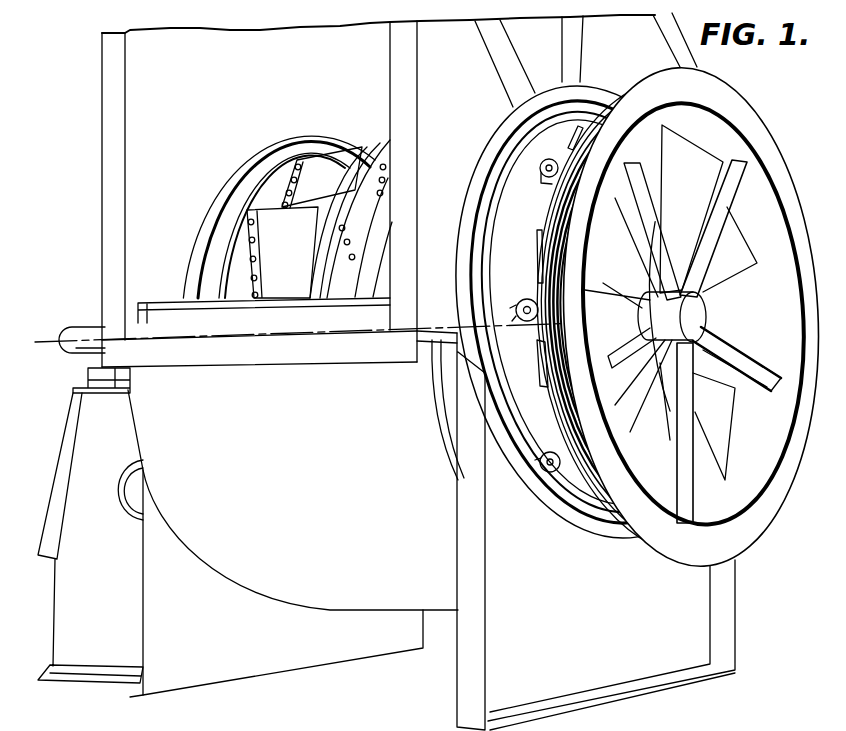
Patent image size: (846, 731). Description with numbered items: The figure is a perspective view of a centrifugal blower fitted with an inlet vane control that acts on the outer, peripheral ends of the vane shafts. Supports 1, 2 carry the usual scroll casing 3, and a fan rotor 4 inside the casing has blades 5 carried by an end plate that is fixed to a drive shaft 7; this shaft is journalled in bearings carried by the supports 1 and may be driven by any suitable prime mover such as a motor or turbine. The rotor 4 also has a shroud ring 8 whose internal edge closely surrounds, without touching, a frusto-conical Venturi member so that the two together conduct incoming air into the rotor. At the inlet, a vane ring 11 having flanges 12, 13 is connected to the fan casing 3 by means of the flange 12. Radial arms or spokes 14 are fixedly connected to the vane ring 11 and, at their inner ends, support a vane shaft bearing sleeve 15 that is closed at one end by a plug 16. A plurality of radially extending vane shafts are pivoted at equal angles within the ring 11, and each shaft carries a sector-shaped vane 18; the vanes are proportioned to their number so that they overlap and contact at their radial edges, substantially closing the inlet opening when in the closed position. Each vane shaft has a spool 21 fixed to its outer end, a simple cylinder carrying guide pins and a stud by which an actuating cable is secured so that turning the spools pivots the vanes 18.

The support 1 is at (218, 668).
The support 2 is at (57, 342).
The scroll casing 3 is at (336, 600).
The fan rotor 4 is at (235, 160).
The blades 5 is at (336, 188).
The drive shaft 7 is at (80, 327).
The shroud ring 8 is at (348, 274).
The vane ring 11 is at (528, 418).
The flange 12 is at (478, 213).
The flange 13 is at (768, 520).
The radial arms or spokes 14 is at (733, 183).
The vane shaft bearing sleeve 15 is at (668, 312).
The plug 16 is at (708, 336).
The sector-shaped vane 18 is at (698, 192).
The spool 21 is at (522, 300).